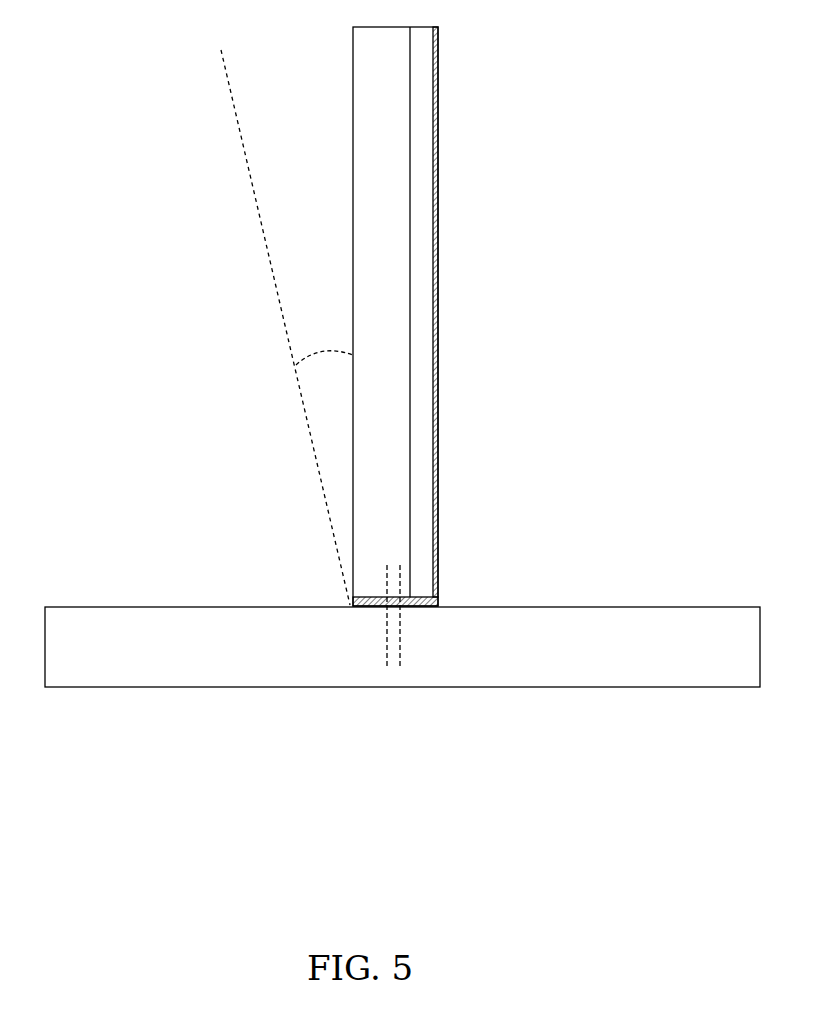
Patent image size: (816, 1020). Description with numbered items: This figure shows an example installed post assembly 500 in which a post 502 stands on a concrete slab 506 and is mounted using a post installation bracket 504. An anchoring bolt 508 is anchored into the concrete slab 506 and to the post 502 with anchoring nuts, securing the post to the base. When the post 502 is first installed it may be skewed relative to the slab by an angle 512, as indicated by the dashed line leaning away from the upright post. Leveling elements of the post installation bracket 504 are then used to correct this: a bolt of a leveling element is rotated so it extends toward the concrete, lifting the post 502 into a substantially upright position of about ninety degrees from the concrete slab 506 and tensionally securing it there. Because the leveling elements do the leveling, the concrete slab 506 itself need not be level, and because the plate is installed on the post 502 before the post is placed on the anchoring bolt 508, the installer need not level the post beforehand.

The structural assembly 500 is at (588, 901).
The post 502 is at (353, 30).
The post installation bracket 504 is at (322, 598).
The concrete slab 506 is at (128, 608).
The anchoring bolt 508 is at (400, 645).
The angle 512 is at (320, 348).